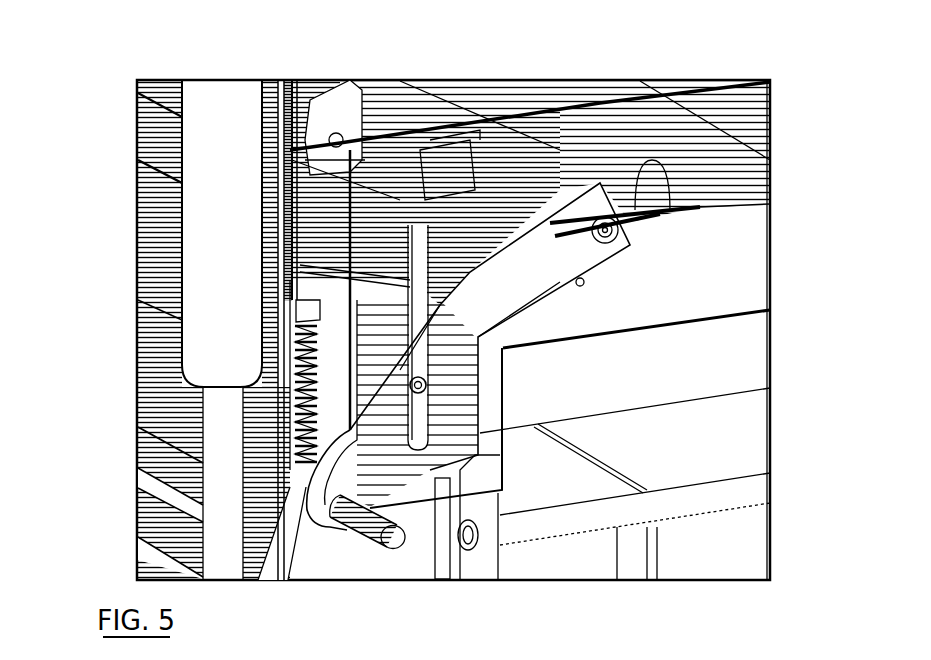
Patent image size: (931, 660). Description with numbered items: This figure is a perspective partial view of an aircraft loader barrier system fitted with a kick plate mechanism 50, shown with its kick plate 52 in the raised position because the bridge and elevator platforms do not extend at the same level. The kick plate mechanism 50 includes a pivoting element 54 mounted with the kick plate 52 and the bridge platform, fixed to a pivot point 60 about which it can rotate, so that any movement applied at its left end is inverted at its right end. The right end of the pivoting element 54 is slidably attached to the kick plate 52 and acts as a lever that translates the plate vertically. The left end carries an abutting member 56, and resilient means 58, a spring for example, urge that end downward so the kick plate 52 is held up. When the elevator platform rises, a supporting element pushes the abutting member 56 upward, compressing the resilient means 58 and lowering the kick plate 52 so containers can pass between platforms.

The kick plate mechanism 50 is at (596, 98).
The kick plate 52 is at (768, 100).
The pivoting element 54 is at (516, 262).
The abutting member 56 is at (378, 527).
The resilient means 58 is at (300, 407).
The pivot point 60 is at (425, 376).